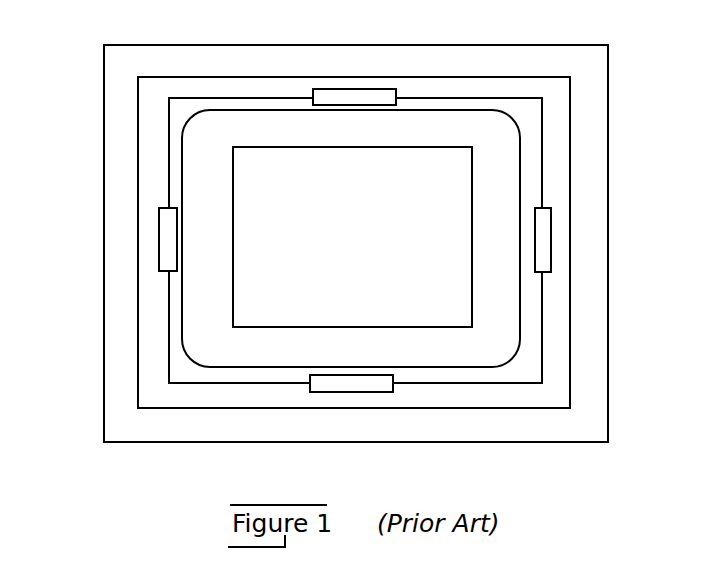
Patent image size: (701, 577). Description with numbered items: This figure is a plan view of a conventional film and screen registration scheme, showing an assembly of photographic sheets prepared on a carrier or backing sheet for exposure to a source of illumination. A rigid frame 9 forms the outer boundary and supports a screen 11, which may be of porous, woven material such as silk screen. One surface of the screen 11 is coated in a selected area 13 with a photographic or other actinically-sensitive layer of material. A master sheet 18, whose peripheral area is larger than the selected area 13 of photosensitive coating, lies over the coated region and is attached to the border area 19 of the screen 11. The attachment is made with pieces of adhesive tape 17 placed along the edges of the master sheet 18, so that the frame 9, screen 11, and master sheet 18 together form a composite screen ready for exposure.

The rigid frame 9 is at (608, 105).
The screen 11 is at (146, 350).
The selected area 13 is at (510, 193).
The adhesive tape 17 is at (372, 93).
The master sheet 18 is at (170, 111).
The border area 19 is at (558, 395).